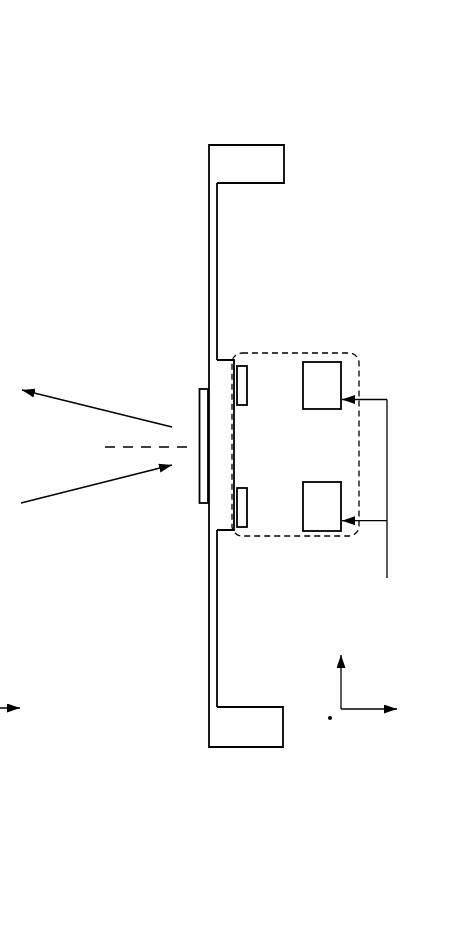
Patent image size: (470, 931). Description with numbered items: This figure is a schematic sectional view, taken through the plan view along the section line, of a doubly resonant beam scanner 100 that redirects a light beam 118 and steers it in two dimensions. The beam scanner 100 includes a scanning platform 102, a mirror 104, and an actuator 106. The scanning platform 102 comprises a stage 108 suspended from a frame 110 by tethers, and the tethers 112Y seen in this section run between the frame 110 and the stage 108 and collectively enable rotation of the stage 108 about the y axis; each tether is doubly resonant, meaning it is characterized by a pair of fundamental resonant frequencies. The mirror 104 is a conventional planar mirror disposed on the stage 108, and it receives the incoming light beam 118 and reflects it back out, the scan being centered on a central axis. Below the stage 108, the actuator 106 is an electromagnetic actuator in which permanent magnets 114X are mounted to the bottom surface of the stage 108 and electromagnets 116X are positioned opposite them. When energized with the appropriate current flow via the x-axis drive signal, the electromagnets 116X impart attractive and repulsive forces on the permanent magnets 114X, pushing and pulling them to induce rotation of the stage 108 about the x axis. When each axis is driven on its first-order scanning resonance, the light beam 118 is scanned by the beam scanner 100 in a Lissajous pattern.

The beam scanner 100 is at (140, 105).
The scanning platform 102 is at (296, 237).
The mirror 104 is at (198, 478).
The actuator 106 is at (360, 372).
The stage 108 is at (218, 375).
The frame 110 is at (265, 165).
The tethers 112Y is at (207, 315).
The permanent magnets 114X is at (248, 380).
The electromagnets 116X is at (323, 390).
The light beam 118 is at (72, 398).